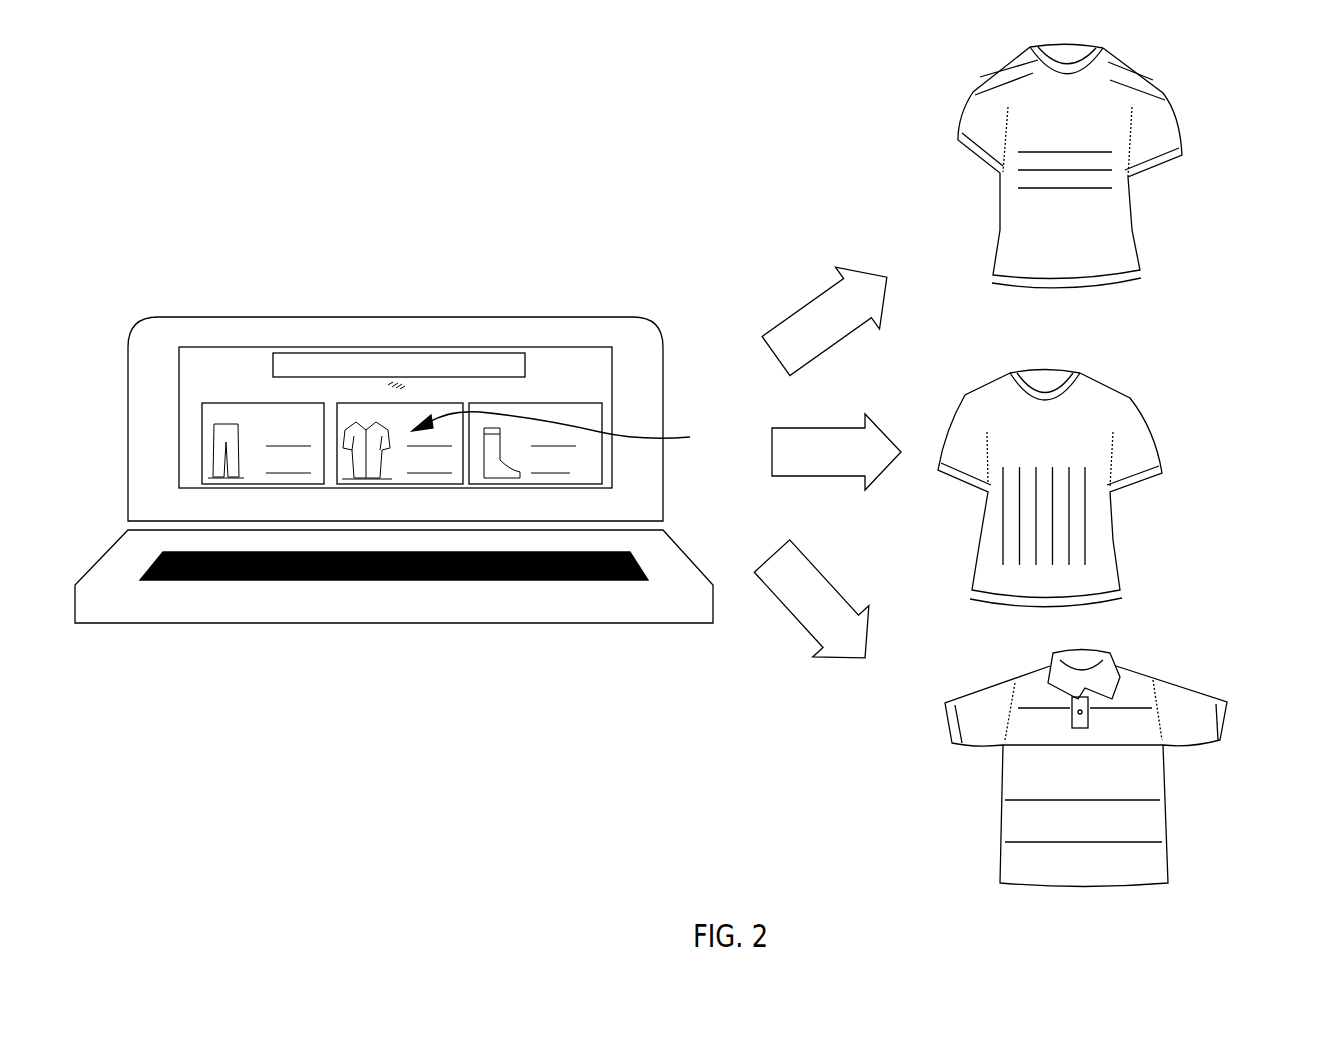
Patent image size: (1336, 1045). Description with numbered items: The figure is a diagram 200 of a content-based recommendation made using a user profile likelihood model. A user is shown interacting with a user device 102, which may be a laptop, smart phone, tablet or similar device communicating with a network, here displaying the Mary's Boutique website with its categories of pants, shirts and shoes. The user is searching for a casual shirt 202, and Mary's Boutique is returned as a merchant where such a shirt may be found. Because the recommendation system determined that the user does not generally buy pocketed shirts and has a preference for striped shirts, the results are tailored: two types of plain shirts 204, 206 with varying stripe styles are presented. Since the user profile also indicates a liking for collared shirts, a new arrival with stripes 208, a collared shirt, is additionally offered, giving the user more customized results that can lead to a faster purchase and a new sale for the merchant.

The environment for generating item listings 200 is at (1262, 74).
The user device 102 is at (668, 340).
The casual shirt 202 is at (585, 426).
The plain shirt 204 is at (958, 140).
The plain shirt 206 is at (960, 412).
The new arrival with stripes 208 is at (950, 735).